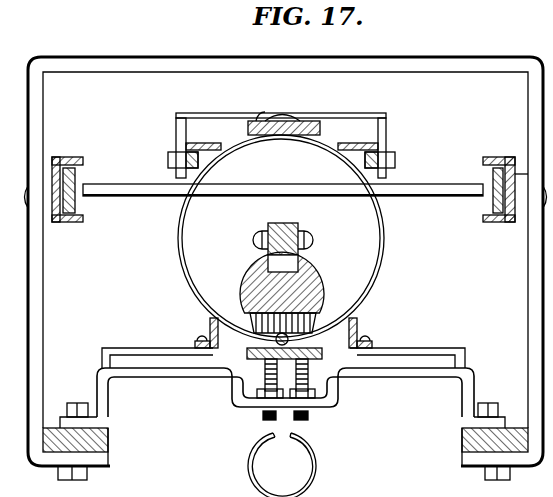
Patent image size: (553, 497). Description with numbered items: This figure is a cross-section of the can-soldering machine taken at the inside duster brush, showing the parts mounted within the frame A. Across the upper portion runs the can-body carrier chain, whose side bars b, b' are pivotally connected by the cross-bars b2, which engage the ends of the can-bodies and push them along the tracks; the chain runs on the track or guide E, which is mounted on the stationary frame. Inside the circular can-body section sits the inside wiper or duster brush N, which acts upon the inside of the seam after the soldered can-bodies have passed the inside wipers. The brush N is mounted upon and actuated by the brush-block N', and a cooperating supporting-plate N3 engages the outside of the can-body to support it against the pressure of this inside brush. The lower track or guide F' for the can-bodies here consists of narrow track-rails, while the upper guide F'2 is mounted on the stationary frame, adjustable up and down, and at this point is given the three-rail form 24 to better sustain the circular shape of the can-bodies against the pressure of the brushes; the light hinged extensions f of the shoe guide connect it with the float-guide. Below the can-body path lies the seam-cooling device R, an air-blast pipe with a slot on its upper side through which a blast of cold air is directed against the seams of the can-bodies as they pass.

The frame A is at (462, 443).
The track or guide for the can-body carrier E is at (72, 222).
The side bar b is at (83, 196).
The side bar b' is at (488, 196).
The cross-bar b2 is at (438, 194).
The upper guide for the can-bodies F'2 is at (302, 129).
The hinged members or extensions f is at (218, 146).
The three-rail form 24 is at (259, 118).
The track or guide for the can-bodies F' is at (283, 340).
The supporting-plate N3 is at (250, 357).
The inside wiper or duster brush N is at (298, 298).
The brush-block N' is at (307, 251).
The seam-cooling device R is at (296, 463).